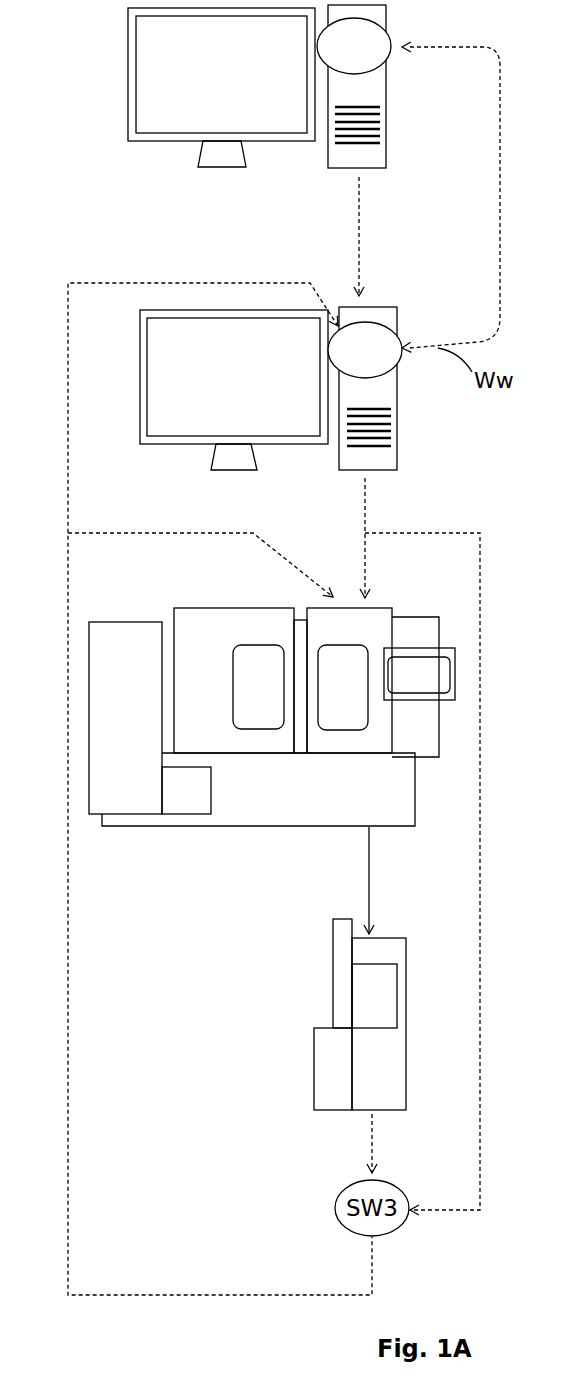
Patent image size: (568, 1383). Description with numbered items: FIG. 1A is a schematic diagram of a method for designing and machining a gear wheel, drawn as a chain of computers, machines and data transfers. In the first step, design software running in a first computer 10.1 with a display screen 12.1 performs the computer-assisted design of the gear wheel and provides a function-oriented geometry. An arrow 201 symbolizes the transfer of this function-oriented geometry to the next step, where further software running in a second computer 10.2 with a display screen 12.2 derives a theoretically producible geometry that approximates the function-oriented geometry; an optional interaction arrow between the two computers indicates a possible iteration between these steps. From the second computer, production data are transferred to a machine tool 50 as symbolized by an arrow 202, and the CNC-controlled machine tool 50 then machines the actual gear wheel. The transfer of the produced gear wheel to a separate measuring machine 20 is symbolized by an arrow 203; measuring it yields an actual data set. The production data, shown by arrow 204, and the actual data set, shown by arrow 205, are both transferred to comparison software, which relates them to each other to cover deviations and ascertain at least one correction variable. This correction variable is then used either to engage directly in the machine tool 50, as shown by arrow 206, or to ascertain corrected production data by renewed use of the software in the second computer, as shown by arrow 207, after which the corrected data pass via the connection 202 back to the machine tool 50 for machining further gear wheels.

The display screen 12.1 is at (133, 81).
The computer 10.1 is at (372, 163).
The arrow 201 is at (360, 230).
The display screen 12.2 is at (147, 384).
The computer 10.2 is at (383, 463).
The arrow 207 is at (68, 456).
The arrow 206 is at (160, 533).
The arrow 202 is at (368, 555).
The machine tool 50 is at (141, 609).
The arrow 203 is at (370, 848).
The arrow 204 is at (480, 850).
The measuring machine 20 is at (319, 951).
The arrow 205 is at (373, 1123).